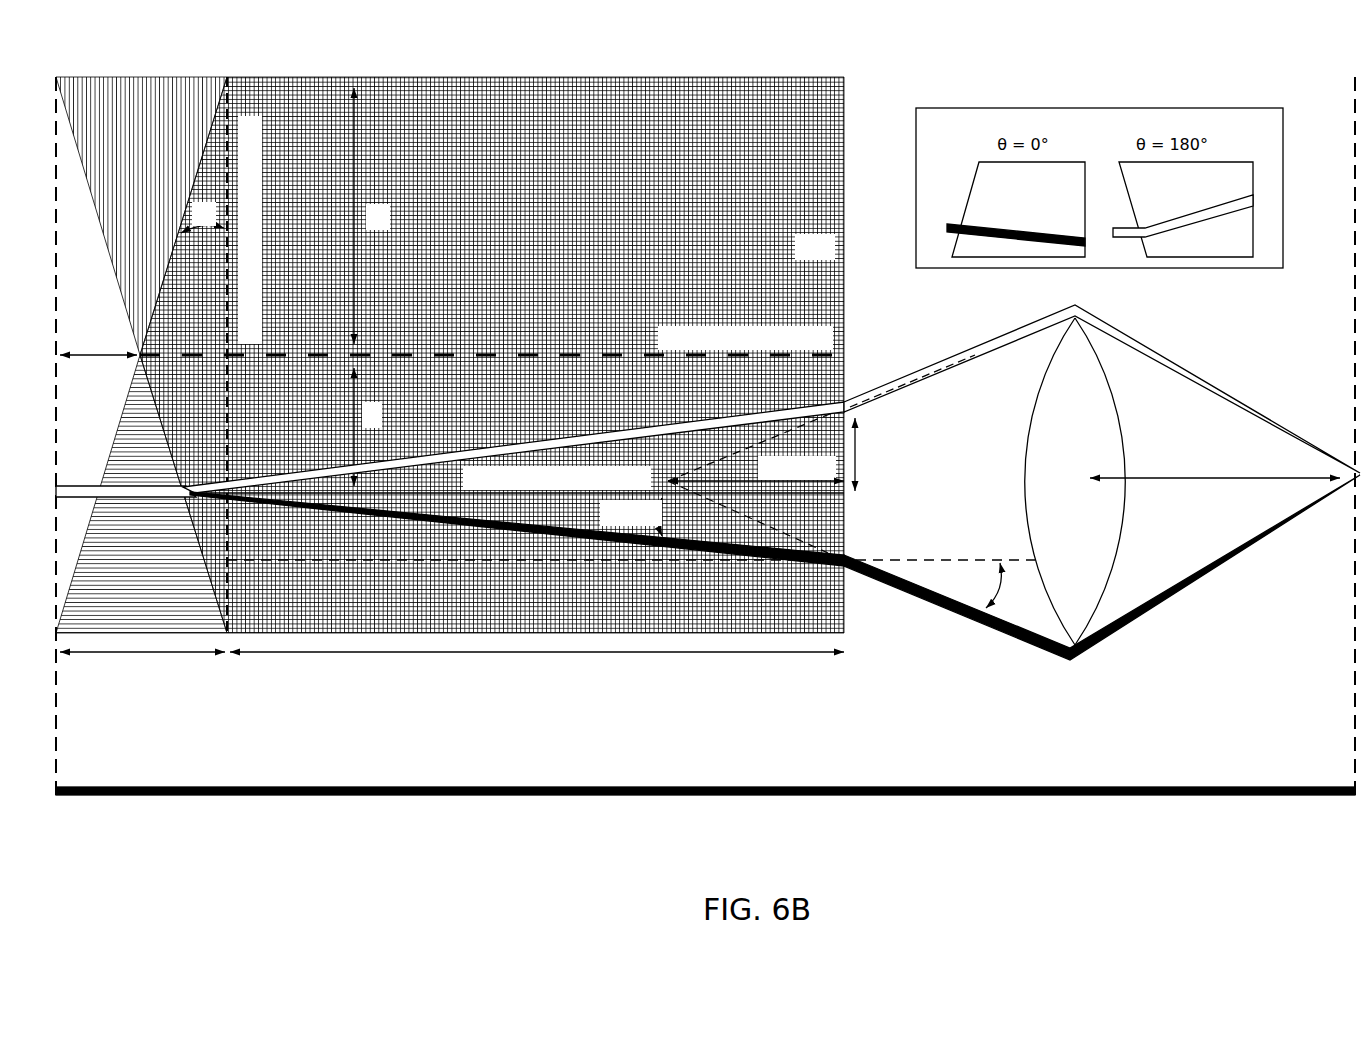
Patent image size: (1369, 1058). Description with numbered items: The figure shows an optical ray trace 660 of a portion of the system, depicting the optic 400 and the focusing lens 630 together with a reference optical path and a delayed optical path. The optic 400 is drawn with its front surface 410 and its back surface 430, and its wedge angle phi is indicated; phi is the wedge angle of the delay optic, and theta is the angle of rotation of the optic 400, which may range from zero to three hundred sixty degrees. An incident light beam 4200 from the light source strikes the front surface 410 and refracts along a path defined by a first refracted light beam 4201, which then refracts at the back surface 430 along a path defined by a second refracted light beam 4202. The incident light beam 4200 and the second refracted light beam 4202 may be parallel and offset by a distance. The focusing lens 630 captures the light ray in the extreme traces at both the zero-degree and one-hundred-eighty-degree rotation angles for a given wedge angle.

The optical ray trace 660 is at (106, 47).
The optic 400 is at (545, 381).
The front surface 410 is at (102, 252).
The incident light beam 4200 is at (93, 483).
The first refracted light beam 4201 is at (337, 478).
The second refracted light beam 4202 is at (960, 376).
The back surface 430 is at (856, 126).
The focusing lens 630 is at (1091, 623).